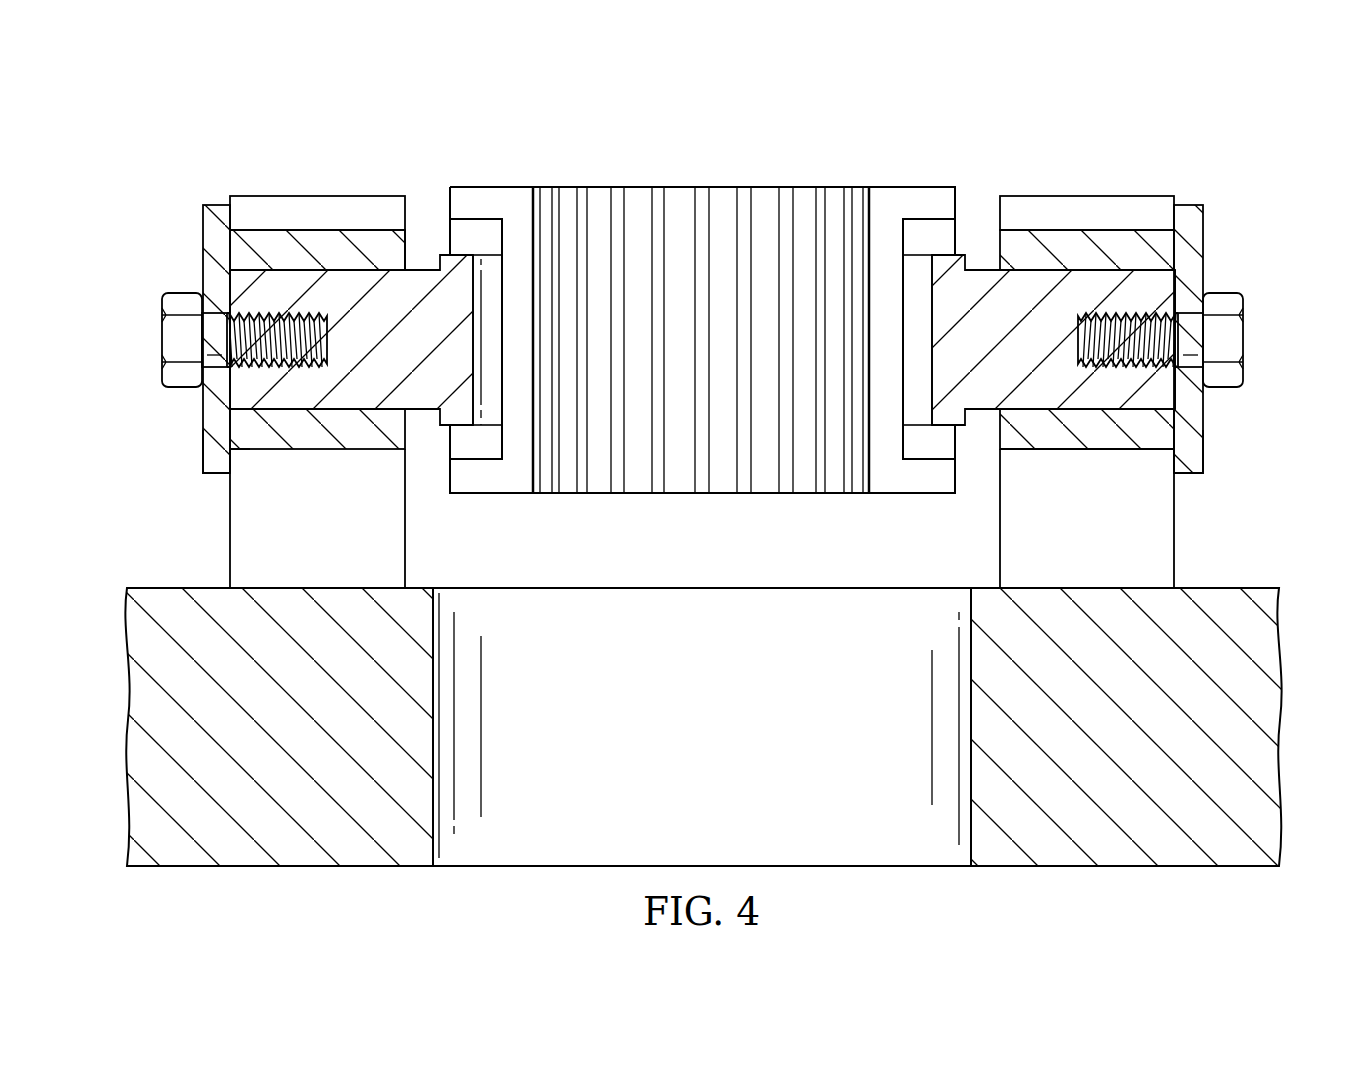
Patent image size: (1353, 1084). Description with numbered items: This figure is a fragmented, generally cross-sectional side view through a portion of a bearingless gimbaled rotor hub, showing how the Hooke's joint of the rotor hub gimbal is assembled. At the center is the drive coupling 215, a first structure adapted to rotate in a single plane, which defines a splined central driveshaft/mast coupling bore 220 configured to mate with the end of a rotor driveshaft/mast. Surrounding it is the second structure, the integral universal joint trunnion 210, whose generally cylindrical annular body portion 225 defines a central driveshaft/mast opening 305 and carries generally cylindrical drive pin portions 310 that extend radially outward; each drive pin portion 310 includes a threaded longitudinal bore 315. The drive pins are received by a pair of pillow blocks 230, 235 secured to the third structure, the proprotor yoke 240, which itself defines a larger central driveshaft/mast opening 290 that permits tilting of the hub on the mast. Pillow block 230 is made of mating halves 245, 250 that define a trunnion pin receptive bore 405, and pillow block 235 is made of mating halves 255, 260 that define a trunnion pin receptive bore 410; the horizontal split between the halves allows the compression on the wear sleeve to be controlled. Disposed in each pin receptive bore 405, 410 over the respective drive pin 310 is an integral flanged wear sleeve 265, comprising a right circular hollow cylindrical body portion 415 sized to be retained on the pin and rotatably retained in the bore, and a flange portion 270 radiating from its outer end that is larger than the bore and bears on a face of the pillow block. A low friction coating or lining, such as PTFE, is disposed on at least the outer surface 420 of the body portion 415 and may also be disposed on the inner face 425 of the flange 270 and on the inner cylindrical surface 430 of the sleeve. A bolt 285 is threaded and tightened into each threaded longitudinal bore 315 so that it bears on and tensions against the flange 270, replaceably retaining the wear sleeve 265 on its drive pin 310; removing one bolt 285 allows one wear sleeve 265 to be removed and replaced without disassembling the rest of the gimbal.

The integral universal joint trunnion 210 is at (975, 225).
The drive coupling 215 is at (511, 172).
The splined central driveshaft/mast coupling bore 220 is at (727, 195).
The annular body portion 225 is at (423, 427).
The pillow block 230 is at (300, 146).
The pillow block 235 is at (1136, 139).
The proprotor yoke 240 is at (145, 575).
The pillow block half 245 is at (267, 204).
The pillow block half 250 is at (238, 550).
The pillow block half 255 is at (1040, 205).
The pillow block half 260 is at (1172, 540).
The integral flanged wear sleeve 265 is at (210, 190).
The flange portion 270 is at (212, 228).
The bolt 285 is at (163, 338).
The central driveshaft/mast opening 290 is at (860, 855).
The central driveshaft/mast opening 305 is at (472, 298).
The drive pin portion 310 is at (333, 390).
The threaded longitudinal bore 315 is at (322, 345).
The trunnion pin receptive bore 405 is at (400, 246).
The trunnion pin receptive bore 410 is at (1110, 430).
The right circular hollow cylindrical body portion 415 is at (343, 250).
The outer surface 420 is at (258, 426).
The inner face 425 is at (232, 462).
The inner cylindrical surface 430 is at (232, 285).